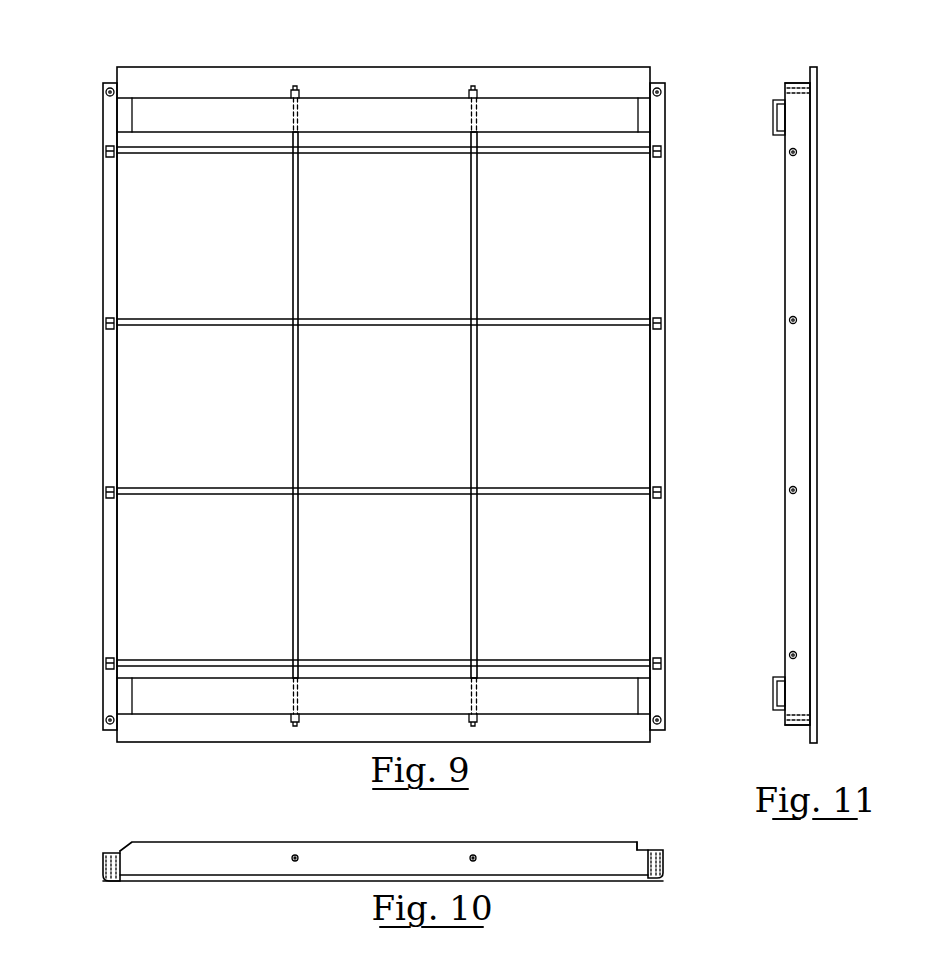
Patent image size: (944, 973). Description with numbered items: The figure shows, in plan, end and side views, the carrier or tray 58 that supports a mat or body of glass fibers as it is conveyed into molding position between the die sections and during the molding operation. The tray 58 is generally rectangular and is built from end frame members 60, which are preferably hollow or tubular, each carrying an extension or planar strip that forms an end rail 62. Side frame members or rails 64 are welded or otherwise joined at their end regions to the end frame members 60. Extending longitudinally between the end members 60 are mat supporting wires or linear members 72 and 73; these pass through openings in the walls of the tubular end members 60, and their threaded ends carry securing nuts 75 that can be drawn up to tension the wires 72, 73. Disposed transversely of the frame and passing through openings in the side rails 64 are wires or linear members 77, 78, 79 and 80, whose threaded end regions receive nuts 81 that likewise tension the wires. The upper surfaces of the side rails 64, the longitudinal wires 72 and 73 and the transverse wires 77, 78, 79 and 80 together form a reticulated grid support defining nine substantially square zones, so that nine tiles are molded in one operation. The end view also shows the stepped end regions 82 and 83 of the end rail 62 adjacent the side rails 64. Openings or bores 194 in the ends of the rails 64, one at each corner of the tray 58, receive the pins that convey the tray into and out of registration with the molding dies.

In FIG. 9, the carrier or tray 58 is at (533, 58).
In FIG. 11, the carrier or tray 58 is at (780, 250).
In FIG. 10, the carrier or tray 58 is at (250, 885).
In FIG. 9, the end frame member 60 is at (428, 108).
In FIG. 11, the end frame member 60 is at (773, 105).
In FIG. 10, the end frame member 60 is at (214, 842).
In FIG. 9, the end rail 62 is at (390, 67).
In FIG. 11, the end rail 62 is at (817, 70).
In FIG. 10, the end rail 62 is at (198, 878).
In FIG. 9, the side frame member or rail 64 is at (108, 196).
In FIG. 11, the side frame member or rail 64 is at (785, 360).
In FIG. 10, the side frame member or rail 64 is at (100, 863).
In FIG. 9, the mat supporting wire 72 is at (300, 375).
In FIG. 10, the mat supporting wire 72 is at (298, 858).
In FIG. 9, the mat supporting wire 73 is at (469, 368).
In FIG. 10, the mat supporting wire 73 is at (476, 858).
In FIG. 9, the securing nut 75 is at (295, 88).
In FIG. 10, the securing nut 75 is at (292, 858).
In FIG. 9, the transverse wire 77 is at (328, 155).
In FIG. 11, the transverse wire 77 is at (797, 152).
In FIG. 9, the transverse wire 78 is at (368, 318).
In FIG. 11, the transverse wire 78 is at (797, 320).
In FIG. 9, the transverse wire 79 is at (370, 488).
In FIG. 11, the transverse wire 79 is at (797, 490).
In FIG. 9, the transverse wire 80 is at (366, 660).
In FIG. 11, the transverse wire 80 is at (797, 655).
In FIG. 9, the nut 81 is at (106, 150).
In FIG. 11, the nut 81 is at (796, 150).
In FIG. 10, the notch 82 is at (122, 850).
In FIG. 10, the notch 83 is at (643, 850).
In FIG. 9, the opening or bore 194 is at (105, 94).
In FIG. 11, the opening or bore 194 is at (812, 90).
In FIG. 10, the opening or bore 194 is at (105, 855).